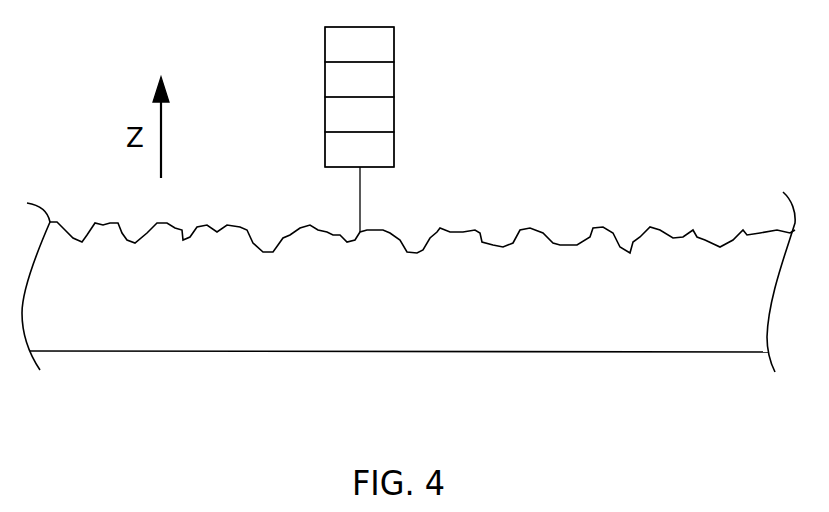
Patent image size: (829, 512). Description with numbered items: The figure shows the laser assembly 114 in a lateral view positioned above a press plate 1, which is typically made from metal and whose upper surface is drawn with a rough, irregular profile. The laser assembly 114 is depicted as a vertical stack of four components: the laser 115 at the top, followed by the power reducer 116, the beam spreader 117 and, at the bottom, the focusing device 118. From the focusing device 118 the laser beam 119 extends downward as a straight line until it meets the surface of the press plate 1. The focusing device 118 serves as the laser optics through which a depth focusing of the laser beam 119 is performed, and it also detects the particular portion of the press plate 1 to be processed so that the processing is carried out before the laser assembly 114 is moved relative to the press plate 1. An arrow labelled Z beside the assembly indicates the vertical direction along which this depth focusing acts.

The press plate 1 is at (643, 297).
The laser assembly 114 is at (282, 68).
The laser 115 is at (395, 45).
The power reducer 116 is at (395, 80).
The beam spreader 117 is at (395, 115).
The focusing device 118 is at (395, 150).
The laser beam 119 is at (360, 212).